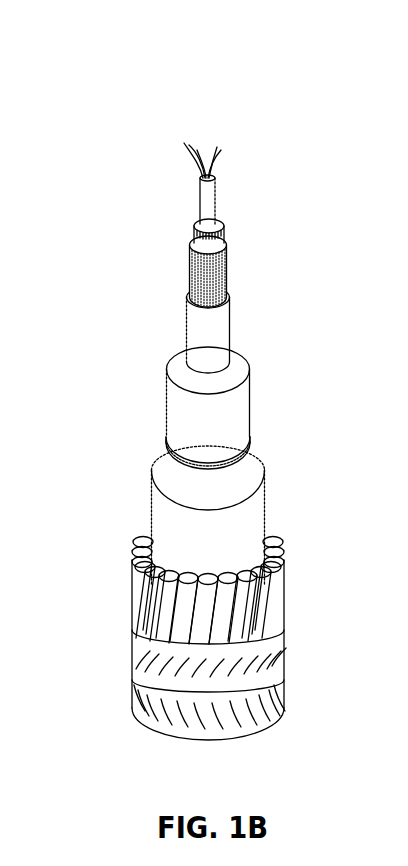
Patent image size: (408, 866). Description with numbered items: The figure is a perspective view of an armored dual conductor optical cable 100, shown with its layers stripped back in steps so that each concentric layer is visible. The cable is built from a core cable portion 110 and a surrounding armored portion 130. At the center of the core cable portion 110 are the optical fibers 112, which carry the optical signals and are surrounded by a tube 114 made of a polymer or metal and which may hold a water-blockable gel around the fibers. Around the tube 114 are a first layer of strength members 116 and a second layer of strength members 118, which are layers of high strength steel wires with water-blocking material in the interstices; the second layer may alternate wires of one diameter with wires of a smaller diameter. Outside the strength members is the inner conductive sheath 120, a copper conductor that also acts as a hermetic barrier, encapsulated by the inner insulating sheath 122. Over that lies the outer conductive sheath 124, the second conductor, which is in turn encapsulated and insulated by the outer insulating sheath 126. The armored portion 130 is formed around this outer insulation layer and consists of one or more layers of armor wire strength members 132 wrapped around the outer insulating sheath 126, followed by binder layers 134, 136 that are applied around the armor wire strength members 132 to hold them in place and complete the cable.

The dual conductor optical cable 100 is at (159, 109).
The core cable portion 110 is at (110, 146).
The optical fibers 112 is at (220, 153).
The tube 114 is at (215, 198).
The first layer of strength members 116 is at (223, 234).
The second layer of strength members 118 is at (227, 266).
The inner conductive sheath 120 is at (229, 332).
The inner insulating sheath 122 is at (250, 401).
The outer conductive sheath 124 is at (251, 450).
The outer insulating sheath 126 is at (266, 515).
The armored portion 130 is at (103, 545).
The armor wire strength members 132 is at (286, 580).
The binder layer 134 is at (286, 637).
The binder layer 136 is at (286, 695).